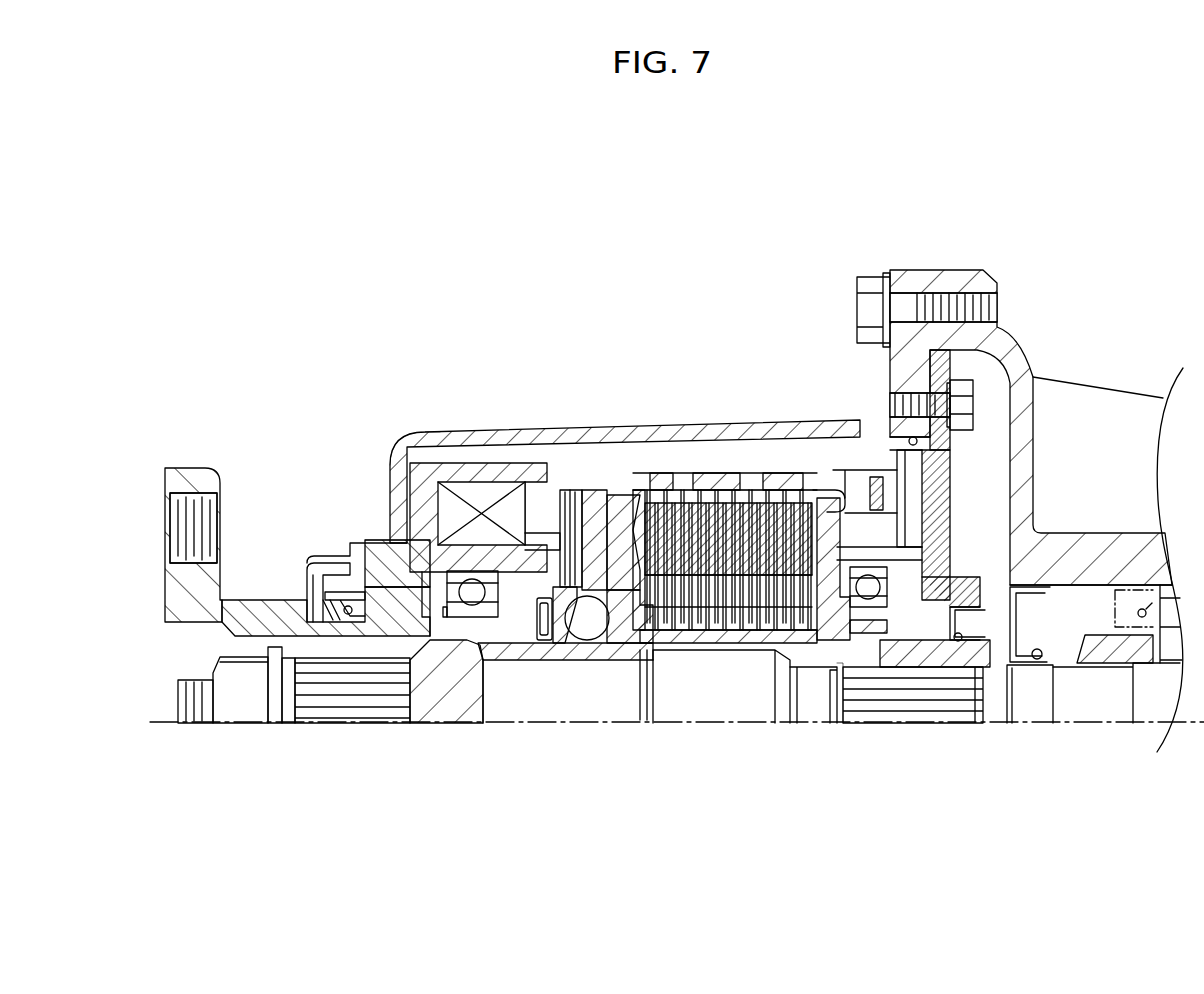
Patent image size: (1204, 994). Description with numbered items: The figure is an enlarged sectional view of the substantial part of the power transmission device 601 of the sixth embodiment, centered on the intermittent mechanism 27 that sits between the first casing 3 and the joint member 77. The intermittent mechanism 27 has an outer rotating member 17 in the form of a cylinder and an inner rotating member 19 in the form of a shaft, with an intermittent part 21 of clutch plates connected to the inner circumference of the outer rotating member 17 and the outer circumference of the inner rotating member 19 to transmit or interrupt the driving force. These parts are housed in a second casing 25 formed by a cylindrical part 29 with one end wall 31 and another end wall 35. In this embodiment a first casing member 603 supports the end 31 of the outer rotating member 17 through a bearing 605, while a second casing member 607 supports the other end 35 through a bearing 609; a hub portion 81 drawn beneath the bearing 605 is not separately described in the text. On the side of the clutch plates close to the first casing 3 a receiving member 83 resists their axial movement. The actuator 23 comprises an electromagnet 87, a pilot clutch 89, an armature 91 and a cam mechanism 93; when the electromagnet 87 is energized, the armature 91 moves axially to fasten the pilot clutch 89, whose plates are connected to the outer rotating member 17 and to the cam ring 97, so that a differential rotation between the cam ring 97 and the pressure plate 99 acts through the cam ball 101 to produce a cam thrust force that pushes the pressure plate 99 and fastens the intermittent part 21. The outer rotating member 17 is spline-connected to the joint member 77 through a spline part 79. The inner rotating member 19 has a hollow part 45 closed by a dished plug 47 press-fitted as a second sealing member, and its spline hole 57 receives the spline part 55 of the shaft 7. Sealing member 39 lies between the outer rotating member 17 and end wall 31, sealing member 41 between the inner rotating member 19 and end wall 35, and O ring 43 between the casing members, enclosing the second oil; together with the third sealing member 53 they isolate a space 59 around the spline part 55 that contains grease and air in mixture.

The first casing 3 is at (1073, 380).
The power transmitting shaft 7 is at (1105, 700).
The outer rotating member 17 is at (727, 480).
The inner rotating member 19 is at (693, 647).
The intermittent part 21 is at (773, 468).
The actuator 23 is at (417, 405).
The second casing 25 is at (830, 420).
The intermittent mechanism 27 is at (669, 342).
The cylindrical part 29 is at (633, 430).
The end wall 31 is at (397, 487).
The end wall 35 is at (985, 520).
The sealing member 39 is at (316, 572).
The sealing member 41 is at (960, 645).
The O ring 43 is at (950, 447).
The hollow part 45 is at (752, 700).
The dished plug 47 is at (823, 700).
The third sealing member 53 is at (1028, 663).
The spline part 55 is at (940, 700).
The spline hole 57 is at (857, 700).
The space 59 is at (1003, 620).
The joint member 77 is at (212, 578).
The spline part 79 is at (312, 722).
The hub 81 is at (500, 645).
The receiving member 83 is at (830, 490).
The electromagnet 87 is at (468, 462).
The pilot clutch 89 is at (562, 475).
The armature 91 is at (579, 470).
The cam mechanism 93 is at (591, 668).
The cam ring 97 is at (563, 637).
The pressure plate 99 is at (578, 617).
The cam ball 101 is at (545, 525).
The power transmission device 601 is at (897, 205).
The first casing member 603 is at (385, 440).
The bearing 605 is at (470, 592).
The second casing member 607 is at (950, 478).
The bearing 609 is at (870, 607).